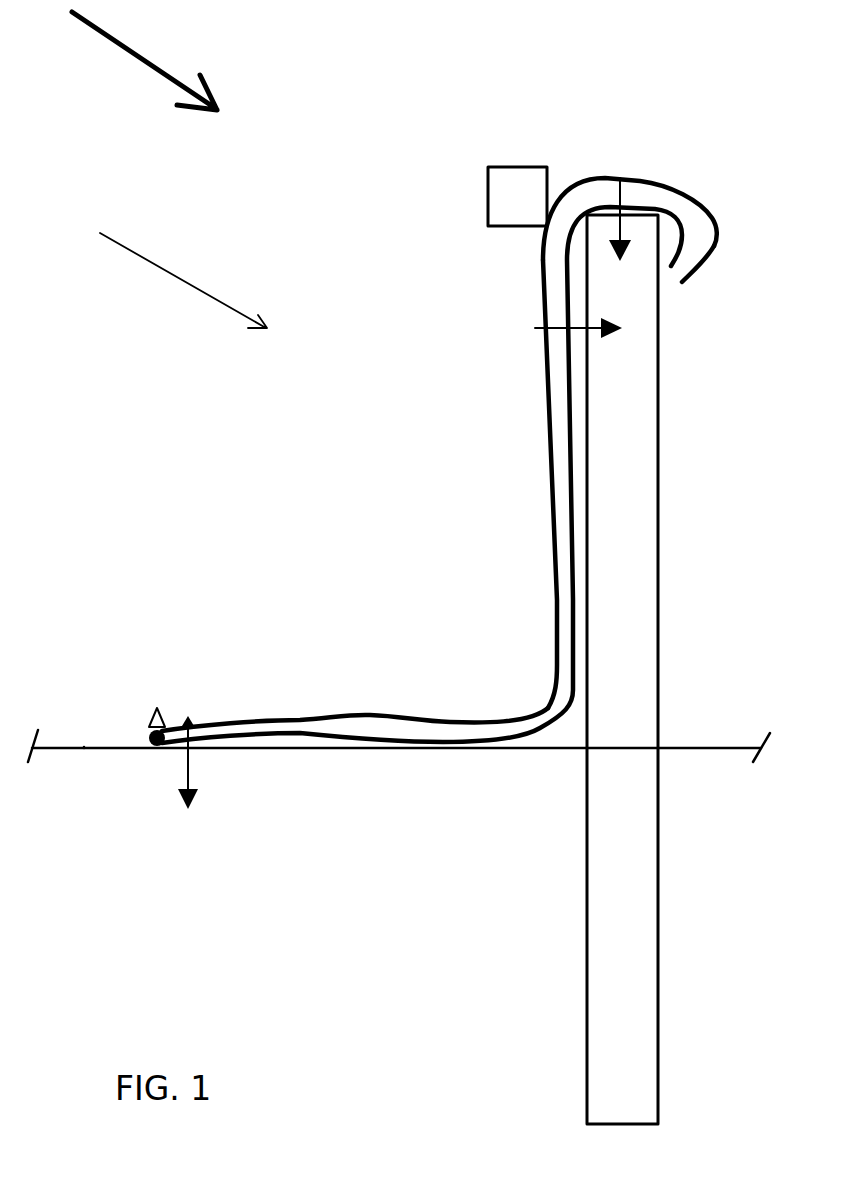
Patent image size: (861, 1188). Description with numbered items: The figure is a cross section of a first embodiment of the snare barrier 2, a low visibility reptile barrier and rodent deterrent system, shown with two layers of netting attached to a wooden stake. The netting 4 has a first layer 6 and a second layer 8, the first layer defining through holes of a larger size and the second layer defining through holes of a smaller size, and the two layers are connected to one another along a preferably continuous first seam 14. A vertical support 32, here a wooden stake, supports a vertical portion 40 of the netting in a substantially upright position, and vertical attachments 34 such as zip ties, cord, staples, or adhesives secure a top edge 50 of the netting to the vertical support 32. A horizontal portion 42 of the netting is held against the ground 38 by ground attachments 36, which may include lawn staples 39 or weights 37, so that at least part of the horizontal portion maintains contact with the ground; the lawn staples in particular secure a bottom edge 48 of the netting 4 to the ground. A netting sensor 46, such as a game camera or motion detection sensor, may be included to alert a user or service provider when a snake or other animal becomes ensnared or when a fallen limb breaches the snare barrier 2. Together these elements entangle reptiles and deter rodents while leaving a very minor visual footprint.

The snare barrier 2 is at (132, 55).
The netting 4 is at (171, 272).
The first layer 6 is at (543, 405).
The second layer 8 is at (573, 613).
The first seam 14 is at (152, 745).
The vertical support 32 is at (635, 517).
The vertical attachments 34 is at (620, 173).
The ground attachments 36 is at (156, 716).
The weights 37 is at (205, 673).
The ground 38 is at (84, 747).
The lawn staples 39 is at (193, 768).
The vertical portion 40 is at (508, 512).
The horizontal portion 42 is at (347, 687).
The netting sensor 46 is at (495, 167).
The bottom edge 48 is at (157, 756).
The top edge 50 is at (690, 265).